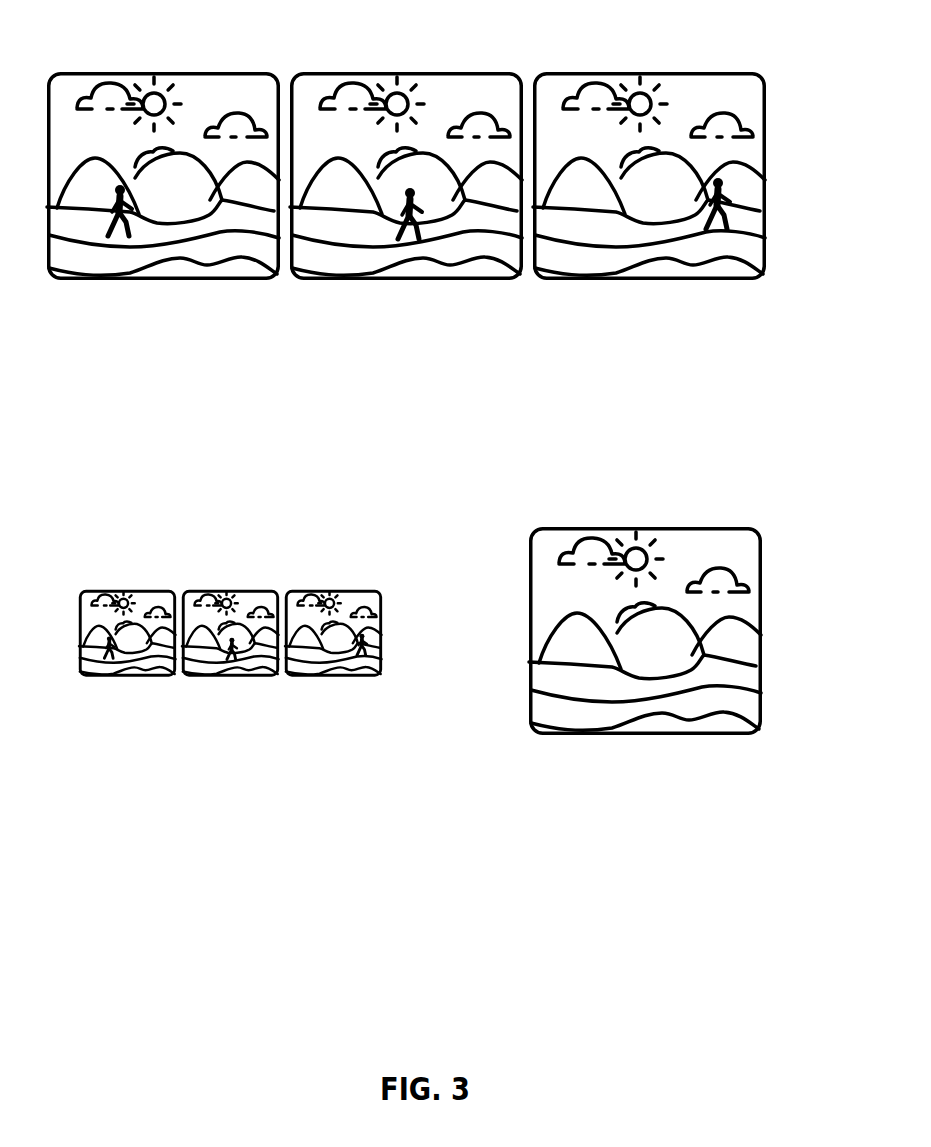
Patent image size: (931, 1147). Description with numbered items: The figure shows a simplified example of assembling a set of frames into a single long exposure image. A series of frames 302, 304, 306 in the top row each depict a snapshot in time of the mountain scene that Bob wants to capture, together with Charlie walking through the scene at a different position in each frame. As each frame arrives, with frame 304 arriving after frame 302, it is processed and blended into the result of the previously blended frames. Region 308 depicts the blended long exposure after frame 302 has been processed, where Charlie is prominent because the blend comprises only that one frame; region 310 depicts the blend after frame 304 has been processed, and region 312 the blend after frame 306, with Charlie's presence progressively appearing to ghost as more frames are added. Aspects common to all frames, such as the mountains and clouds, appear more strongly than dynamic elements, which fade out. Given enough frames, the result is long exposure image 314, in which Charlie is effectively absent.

The frame 302 is at (192, 72).
The frame 304 is at (448, 72).
The frame 306 is at (695, 72).
The region 308 is at (130, 590).
The region 310 is at (240, 590).
The region 312 is at (335, 590).
The long exposure image 314 is at (690, 527).